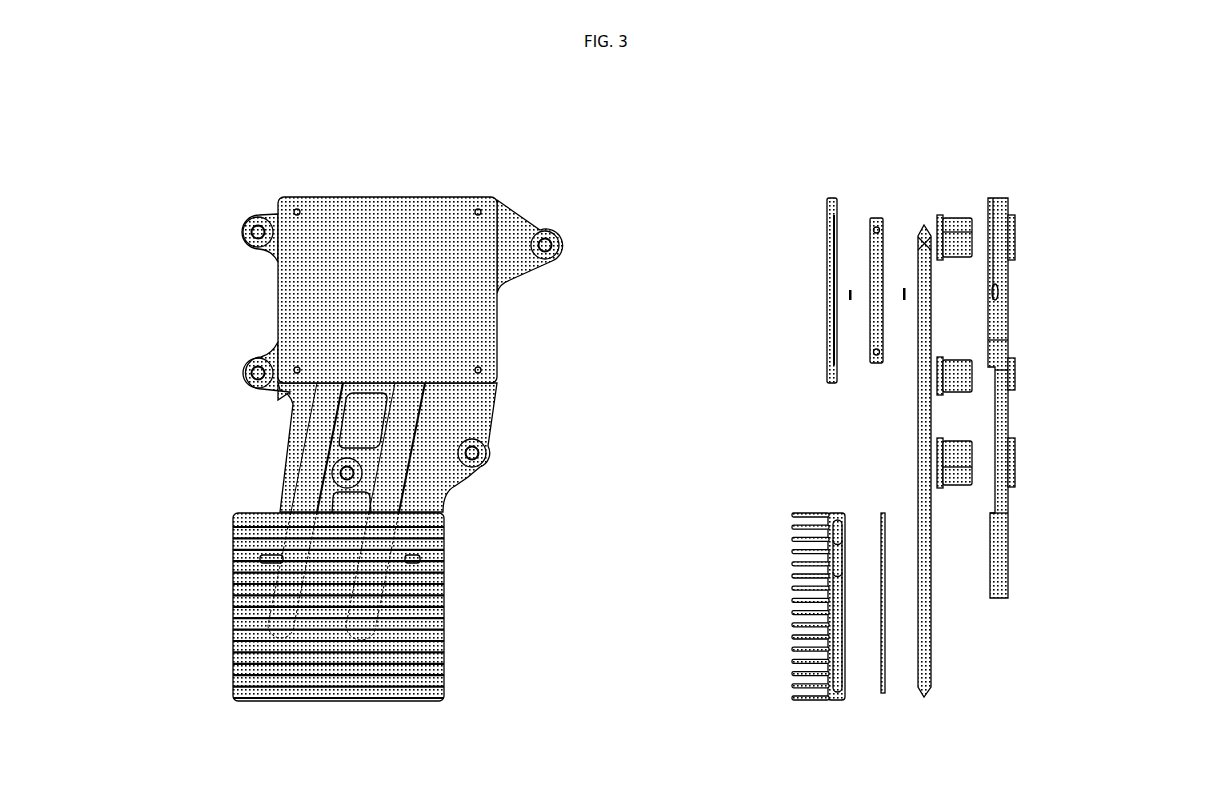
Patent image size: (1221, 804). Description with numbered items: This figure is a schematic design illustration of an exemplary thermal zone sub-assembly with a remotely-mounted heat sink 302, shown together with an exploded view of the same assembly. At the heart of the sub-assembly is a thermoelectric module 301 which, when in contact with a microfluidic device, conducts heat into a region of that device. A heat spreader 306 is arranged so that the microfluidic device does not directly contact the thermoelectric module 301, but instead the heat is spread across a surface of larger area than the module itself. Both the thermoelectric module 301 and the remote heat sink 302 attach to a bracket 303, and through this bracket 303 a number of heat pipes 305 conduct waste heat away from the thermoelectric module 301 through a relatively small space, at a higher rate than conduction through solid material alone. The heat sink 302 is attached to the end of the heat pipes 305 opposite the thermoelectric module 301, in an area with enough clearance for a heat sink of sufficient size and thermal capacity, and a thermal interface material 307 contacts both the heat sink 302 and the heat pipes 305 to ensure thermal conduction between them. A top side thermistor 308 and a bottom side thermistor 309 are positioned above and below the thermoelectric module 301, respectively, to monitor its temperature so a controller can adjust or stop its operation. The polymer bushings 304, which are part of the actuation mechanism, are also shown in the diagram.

The thermoelectric module 301 is at (876, 264).
The heat sink 302 is at (447, 585).
The bracket 303 is at (1000, 498).
The polymer bushings 304 is at (461, 457).
The heat pipes 305 is at (325, 395).
The heat spreader 306 is at (830, 248).
The thermal interface material 307 is at (883, 668).
The top side thermistor 308 is at (850, 290).
The bottom side thermistor 309 is at (905, 288).